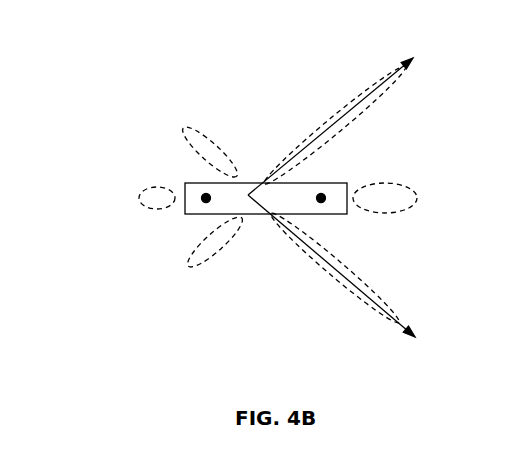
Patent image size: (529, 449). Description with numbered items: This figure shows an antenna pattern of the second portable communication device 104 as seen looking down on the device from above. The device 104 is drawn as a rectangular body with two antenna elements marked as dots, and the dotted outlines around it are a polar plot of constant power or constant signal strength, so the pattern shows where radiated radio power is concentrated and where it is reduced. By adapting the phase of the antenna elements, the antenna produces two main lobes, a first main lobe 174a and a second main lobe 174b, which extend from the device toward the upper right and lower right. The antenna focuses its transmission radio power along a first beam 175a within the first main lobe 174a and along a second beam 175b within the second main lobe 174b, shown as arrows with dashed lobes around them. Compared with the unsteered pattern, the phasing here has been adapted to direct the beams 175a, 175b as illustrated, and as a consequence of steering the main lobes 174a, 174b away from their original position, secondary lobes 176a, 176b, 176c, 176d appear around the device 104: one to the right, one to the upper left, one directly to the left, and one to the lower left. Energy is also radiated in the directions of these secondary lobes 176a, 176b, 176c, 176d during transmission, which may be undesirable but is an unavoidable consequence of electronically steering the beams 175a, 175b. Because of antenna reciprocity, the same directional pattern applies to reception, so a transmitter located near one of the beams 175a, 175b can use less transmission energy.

The second portable communication device 104 is at (260, 183).
The first main lobe 174a is at (362, 90).
The second main lobe 174b is at (365, 305).
The first beam 175a is at (402, 65).
The second beam 175b is at (405, 320).
The secondary lobe 176a is at (417, 195).
The secondary lobe 176b is at (192, 130).
The secondary lobe 176c is at (133, 197).
The secondary lobe 176d is at (188, 265).